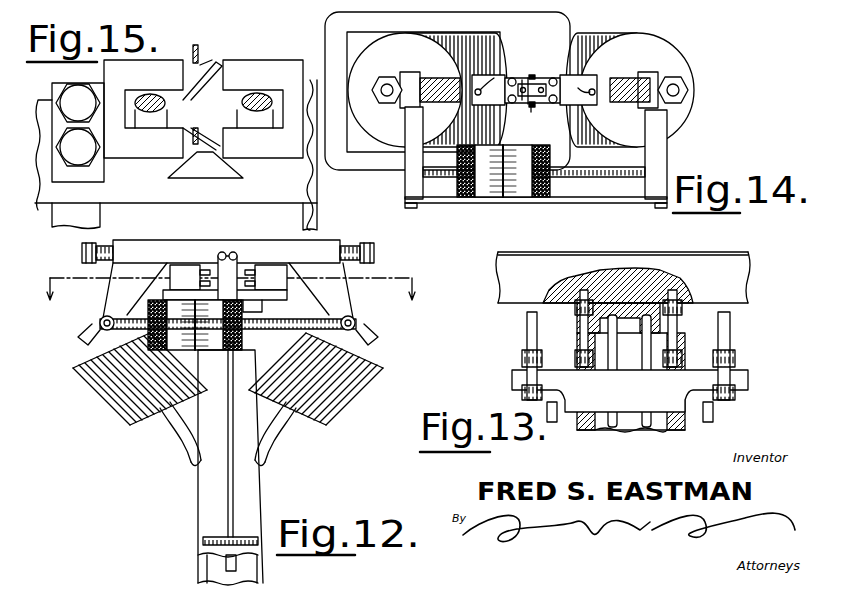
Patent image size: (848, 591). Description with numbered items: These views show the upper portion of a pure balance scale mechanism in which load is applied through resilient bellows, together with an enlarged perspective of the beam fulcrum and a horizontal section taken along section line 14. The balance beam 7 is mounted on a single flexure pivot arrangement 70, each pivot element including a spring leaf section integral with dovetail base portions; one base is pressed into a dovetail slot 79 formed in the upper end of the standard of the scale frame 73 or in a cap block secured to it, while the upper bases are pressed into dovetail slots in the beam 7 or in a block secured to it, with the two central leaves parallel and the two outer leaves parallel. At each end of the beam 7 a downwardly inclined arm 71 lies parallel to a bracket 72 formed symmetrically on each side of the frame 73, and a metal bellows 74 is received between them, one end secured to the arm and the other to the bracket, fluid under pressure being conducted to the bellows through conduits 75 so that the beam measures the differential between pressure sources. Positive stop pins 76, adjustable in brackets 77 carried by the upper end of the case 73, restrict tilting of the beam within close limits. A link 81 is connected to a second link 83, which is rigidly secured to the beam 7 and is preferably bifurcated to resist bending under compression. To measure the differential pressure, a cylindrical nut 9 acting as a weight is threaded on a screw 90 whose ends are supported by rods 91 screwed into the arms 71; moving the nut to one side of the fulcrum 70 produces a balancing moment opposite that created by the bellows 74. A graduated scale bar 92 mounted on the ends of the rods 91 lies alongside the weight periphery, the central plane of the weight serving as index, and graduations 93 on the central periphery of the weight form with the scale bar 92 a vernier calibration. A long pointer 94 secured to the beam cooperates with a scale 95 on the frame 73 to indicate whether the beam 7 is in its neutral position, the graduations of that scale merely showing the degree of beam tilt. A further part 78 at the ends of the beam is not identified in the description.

In FIG. 12, the balance beam 7 is at (201, 254).
In FIG. 13, the balance beam 7 is at (706, 268).
In FIG. 14, the cylindrical nut 9 is at (484, 198).
In FIG. 12, the cylindrical nut 9 is at (150, 300).
In FIG. 12, the section line 14 is at (231, 305).
In FIG. 15, the flexure pivot arrangement 70 is at (212, 62).
In FIG. 14, the flexure pivot arrangement 70 is at (524, 80).
In FIG. 12, the flexure pivot arrangement 70 is at (236, 268).
In FIG. 13, the flexure pivot arrangement 70 is at (620, 332).
In FIG. 14, the downwardly inclined arm 71 is at (427, 76).
In FIG. 12, the downwardly inclined arm 71 is at (115, 306).
In FIG. 12, the bracket 72 is at (169, 410).
In FIG. 15, the scale frame 73 is at (100, 215).
In FIG. 12, the scale frame 73 is at (253, 502).
In FIG. 13, the scale frame 73 is at (580, 426).
In FIG. 14, the metal bellows 74 is at (435, 42).
In FIG. 12, the metal bellows 74 is at (92, 398).
In FIG. 12, the conduit 75 is at (189, 462).
In FIG. 14, the stop pin 76 is at (534, 90).
In FIG. 12, the stop pin 76 is at (164, 282).
In FIG. 13, the stop pin 76 is at (537, 340).
In FIG. 15, the bracket 77 is at (42, 106).
In FIG. 13, the bracket 77 is at (520, 380).
In FIG. 12, the nut 78 is at (82, 253).
In FIG. 15, the dovetail slot 79 is at (222, 178).
In FIG. 12, the link 81 is at (228, 568).
In FIG. 15, the second link 83 is at (150, 100).
In FIG. 14, the second link 83 is at (537, 84).
In FIG. 13, the second link 83 is at (648, 412).
In FIG. 14, the screw 90 is at (636, 171).
In FIG. 14, the rod 91 is at (667, 146).
In FIG. 14, the graduated scale bar 92 is at (568, 204).
In FIG. 12, the graduated scale bar 92 is at (96, 332).
In FIG. 14, the graduations 93 is at (508, 188).
In FIG. 12, the graduations 93 is at (198, 346).
In FIG. 14, the long pointer 94 is at (532, 110).
In FIG. 12, the long pointer 94 is at (228, 462).
In FIG. 12, the scale 95 is at (202, 538).